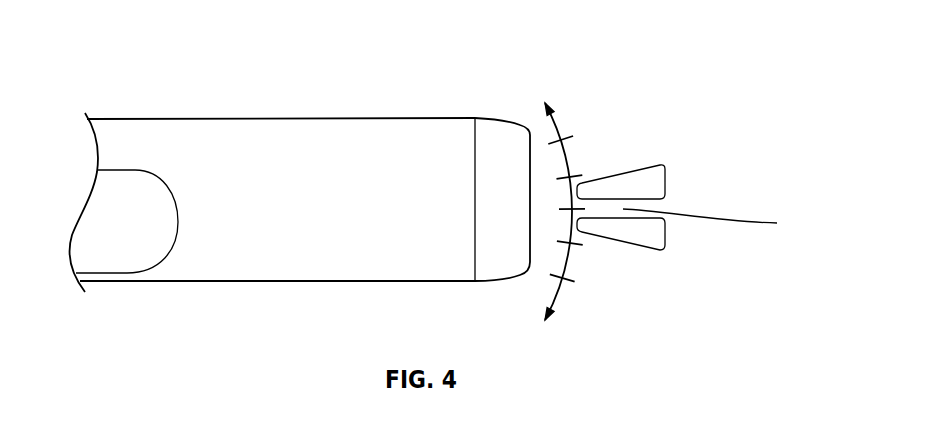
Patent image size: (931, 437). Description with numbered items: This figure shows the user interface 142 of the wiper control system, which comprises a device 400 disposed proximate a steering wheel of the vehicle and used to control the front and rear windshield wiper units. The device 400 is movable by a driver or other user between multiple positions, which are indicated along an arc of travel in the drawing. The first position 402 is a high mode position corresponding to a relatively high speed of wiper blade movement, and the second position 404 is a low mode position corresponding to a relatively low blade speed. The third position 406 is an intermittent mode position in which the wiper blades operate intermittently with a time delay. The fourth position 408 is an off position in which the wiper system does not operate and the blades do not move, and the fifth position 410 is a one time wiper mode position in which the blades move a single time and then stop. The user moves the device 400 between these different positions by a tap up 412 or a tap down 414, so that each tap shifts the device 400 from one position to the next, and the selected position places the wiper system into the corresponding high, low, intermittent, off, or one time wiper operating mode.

The user interface 142 is at (452, 60).
The device 400 is at (253, 282).
The first position 402 is at (603, 133).
The second position 404 is at (620, 169).
The third position 406 is at (721, 225).
The fourth position 408 is at (627, 250).
The fifth position 410 is at (607, 285).
The tap up 412 is at (733, 175).
The tap down 414 is at (753, 253).